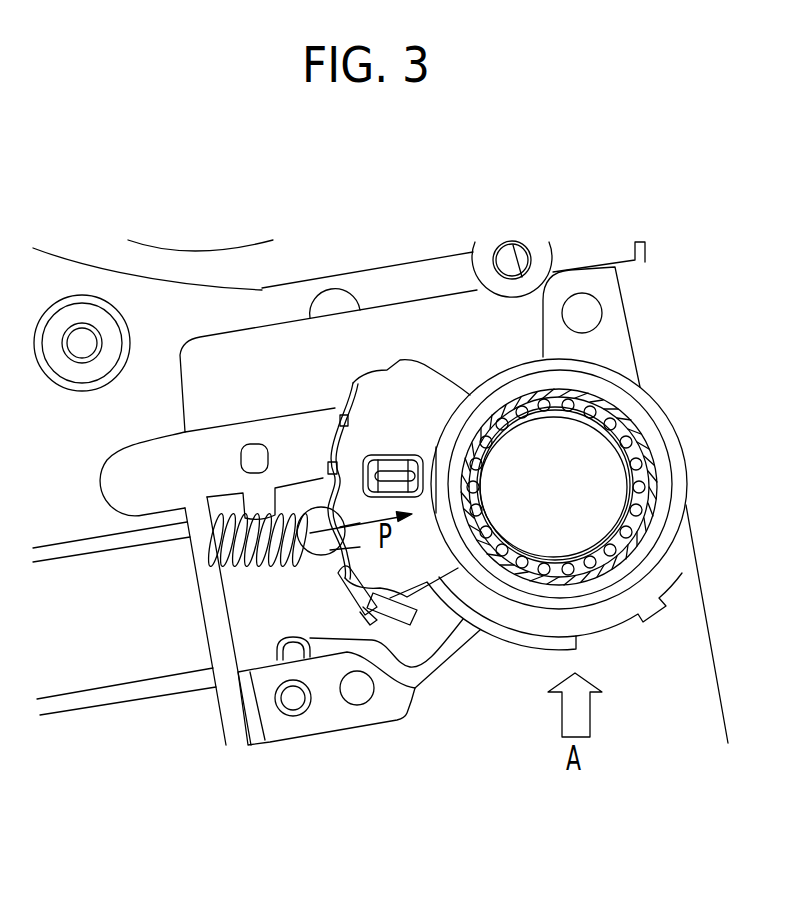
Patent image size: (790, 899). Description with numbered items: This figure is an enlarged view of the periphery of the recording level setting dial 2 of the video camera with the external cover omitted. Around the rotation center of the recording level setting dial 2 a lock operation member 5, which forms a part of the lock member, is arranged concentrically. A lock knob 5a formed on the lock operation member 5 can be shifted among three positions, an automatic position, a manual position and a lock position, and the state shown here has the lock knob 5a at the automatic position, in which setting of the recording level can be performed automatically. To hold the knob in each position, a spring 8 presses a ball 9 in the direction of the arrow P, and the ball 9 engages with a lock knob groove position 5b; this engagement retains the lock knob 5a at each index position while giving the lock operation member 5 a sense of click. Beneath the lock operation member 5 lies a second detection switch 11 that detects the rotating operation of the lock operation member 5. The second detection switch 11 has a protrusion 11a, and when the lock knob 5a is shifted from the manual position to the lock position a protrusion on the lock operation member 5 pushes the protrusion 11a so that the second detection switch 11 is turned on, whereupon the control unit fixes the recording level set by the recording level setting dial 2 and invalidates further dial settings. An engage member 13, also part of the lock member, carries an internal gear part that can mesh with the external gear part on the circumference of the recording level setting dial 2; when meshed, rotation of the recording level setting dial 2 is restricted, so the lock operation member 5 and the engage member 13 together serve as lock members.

The recording level setting dial 2 is at (570, 482).
The lock operation member 5 is at (418, 385).
The lock knob 5a is at (330, 463).
The lock knob groove position 5b is at (330, 490).
The spring 8 is at (250, 570).
The ball 9 is at (320, 522).
The second detection switch 11 is at (345, 588).
The protrusion 11a is at (423, 612).
The engage member 13 is at (318, 718).